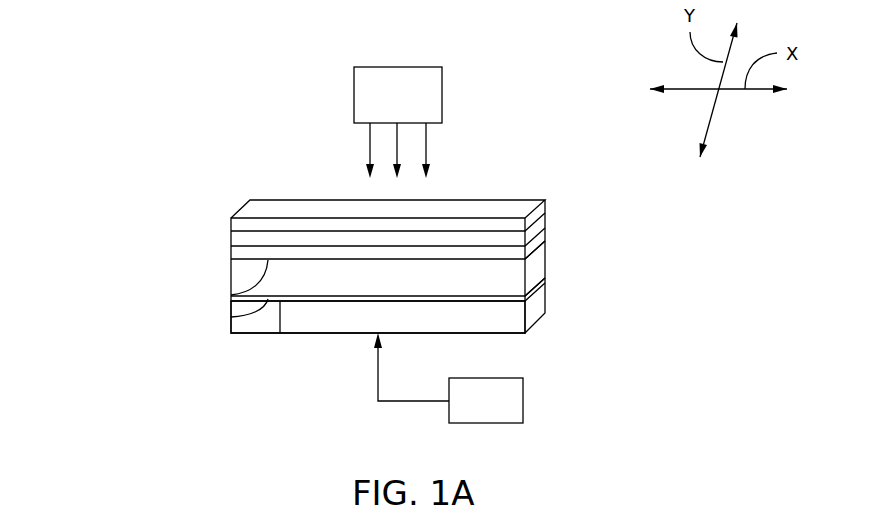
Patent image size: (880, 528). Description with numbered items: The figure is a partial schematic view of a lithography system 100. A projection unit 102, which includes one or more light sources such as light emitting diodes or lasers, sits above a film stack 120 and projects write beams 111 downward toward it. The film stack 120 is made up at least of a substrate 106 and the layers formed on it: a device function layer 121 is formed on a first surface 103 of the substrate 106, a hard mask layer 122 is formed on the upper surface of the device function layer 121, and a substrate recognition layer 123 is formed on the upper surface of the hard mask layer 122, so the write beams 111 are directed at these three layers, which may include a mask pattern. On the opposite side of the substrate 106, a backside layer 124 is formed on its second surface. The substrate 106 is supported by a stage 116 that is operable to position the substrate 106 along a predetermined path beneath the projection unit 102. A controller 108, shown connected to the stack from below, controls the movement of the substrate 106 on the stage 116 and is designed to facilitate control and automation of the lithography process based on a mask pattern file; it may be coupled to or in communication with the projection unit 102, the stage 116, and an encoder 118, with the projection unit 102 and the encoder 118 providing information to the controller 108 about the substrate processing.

The lithography system 100 is at (272, 78).
The projection unit 102 is at (417, 108).
The write beams 111 is at (370, 145).
The film stack 120 is at (158, 375).
The substrate recognition layer 123 is at (238, 226).
The hard mask layer 122 is at (238, 238).
The device function layer 121 is at (238, 252).
The first surface 103 is at (231, 295).
The substrate 106 is at (510, 275).
The backside layer 124 is at (231, 317).
The stage 116 is at (510, 313).
The encoder 118 is at (255, 333).
The controller 108 is at (507, 413).